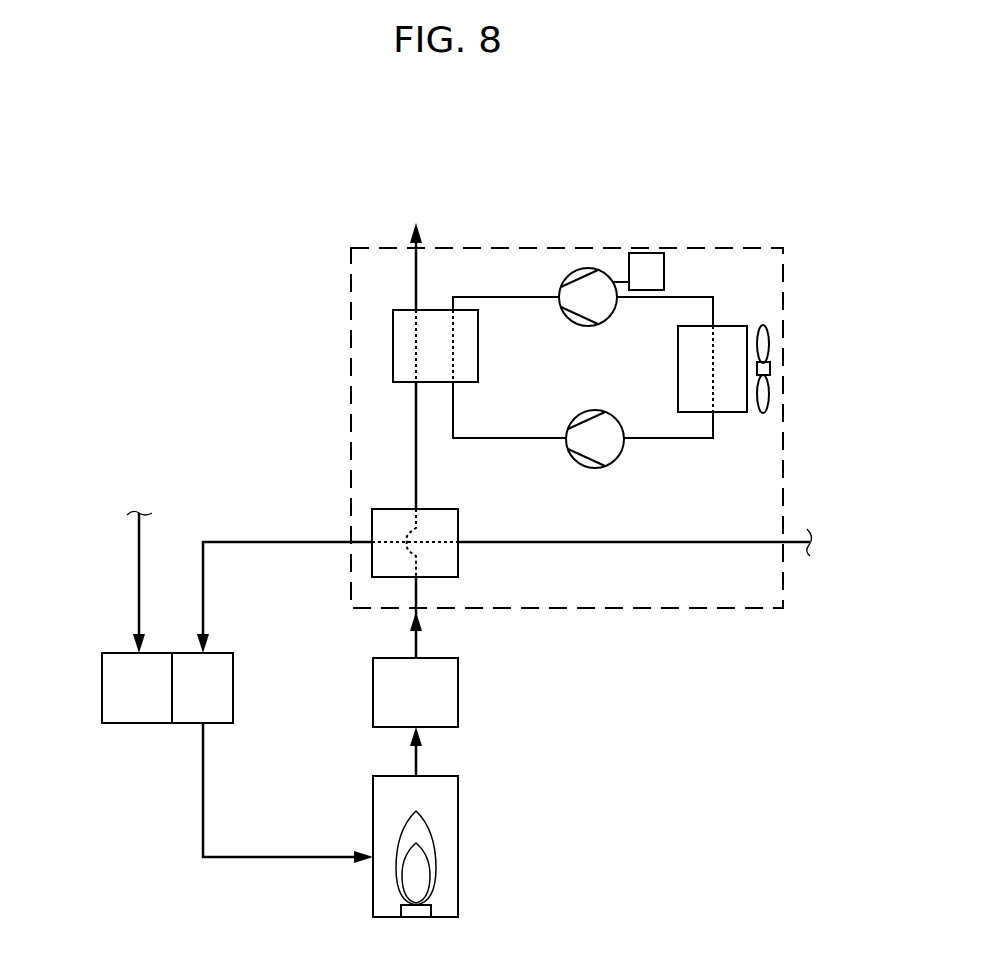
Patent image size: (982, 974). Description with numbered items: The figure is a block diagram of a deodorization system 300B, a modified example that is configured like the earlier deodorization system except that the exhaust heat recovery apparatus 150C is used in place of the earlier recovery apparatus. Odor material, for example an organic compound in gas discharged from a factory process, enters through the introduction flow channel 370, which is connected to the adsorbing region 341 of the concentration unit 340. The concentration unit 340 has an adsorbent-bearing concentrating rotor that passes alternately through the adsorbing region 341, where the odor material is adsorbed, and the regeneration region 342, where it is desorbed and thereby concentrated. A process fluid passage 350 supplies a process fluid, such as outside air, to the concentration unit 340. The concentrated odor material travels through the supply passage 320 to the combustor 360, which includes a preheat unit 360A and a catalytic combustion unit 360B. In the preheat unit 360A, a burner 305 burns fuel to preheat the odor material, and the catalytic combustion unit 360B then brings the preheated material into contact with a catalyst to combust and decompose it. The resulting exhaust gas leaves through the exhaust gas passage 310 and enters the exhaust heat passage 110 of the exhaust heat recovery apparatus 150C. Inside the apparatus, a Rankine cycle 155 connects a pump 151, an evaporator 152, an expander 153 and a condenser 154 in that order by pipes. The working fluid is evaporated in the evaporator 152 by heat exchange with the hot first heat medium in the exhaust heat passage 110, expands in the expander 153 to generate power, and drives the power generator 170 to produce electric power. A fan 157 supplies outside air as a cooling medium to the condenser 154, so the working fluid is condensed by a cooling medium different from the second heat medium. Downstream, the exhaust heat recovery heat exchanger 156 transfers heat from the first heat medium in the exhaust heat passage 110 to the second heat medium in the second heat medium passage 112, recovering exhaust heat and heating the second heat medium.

The deodorization system 300B is at (677, 170).
The exhaust heat recovery apparatus 150C is at (733, 247).
The exhaust heat passage 110 is at (416, 462).
The evaporator 152 is at (393, 348).
The Rankine cycle 155 is at (503, 295).
The expander 153 is at (586, 268).
The power generator 170 is at (643, 268).
The condenser 154 is at (717, 326).
The fan 157 is at (770, 368).
The pump 151 is at (620, 450).
The exhaust heat recovery heat exchanger 156 is at (372, 520).
The process fluid passage 350 is at (228, 541).
The second heat medium passage 112 is at (585, 545).
The introduction flow channel 370 is at (139, 573).
The concentration unit 340 is at (233, 664).
The adsorbing region 341 is at (127, 703).
The regeneration region 342 is at (215, 692).
The supply passage 320 is at (270, 855).
The exhaust gas passage 310 is at (418, 643).
The catalytic combustion unit 360B is at (445, 715).
The preheat unit 360A is at (435, 797).
The combustor 360 is at (541, 702).
The burner 305 is at (431, 908).